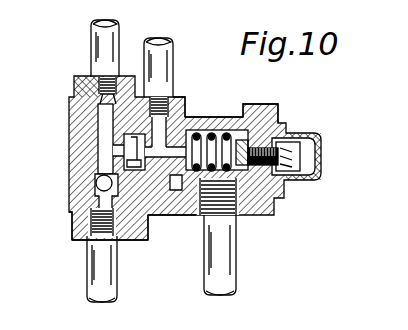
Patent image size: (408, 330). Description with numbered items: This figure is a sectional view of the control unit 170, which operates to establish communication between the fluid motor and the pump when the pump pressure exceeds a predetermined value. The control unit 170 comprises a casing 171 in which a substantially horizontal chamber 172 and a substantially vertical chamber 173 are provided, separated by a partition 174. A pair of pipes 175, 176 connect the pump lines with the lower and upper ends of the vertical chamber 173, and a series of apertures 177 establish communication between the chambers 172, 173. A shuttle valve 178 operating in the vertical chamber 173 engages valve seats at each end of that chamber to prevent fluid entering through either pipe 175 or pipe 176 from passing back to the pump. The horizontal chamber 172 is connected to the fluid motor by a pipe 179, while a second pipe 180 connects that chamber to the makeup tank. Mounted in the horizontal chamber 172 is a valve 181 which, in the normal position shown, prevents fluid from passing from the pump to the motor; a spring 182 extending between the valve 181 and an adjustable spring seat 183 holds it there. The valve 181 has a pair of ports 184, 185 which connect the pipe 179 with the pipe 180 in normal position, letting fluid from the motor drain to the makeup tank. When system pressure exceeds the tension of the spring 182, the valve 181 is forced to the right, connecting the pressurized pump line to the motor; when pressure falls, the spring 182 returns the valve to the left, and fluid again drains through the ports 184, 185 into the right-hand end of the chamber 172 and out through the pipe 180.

The control unit 170 is at (173, 163).
The casing 171 is at (217, 117).
The horizontal chamber 172 is at (236, 178).
The vertical chamber 173 is at (98, 136).
The partition 174 is at (152, 230).
The pipe 175 is at (89, 270).
The pipe 176 is at (91, 40).
The apertures 177 is at (131, 147).
The shuttle valve 178 is at (98, 181).
The pipe 179 is at (173, 56).
The pipe 180 is at (224, 273).
The valve 181 is at (173, 214).
The spring 182 is at (233, 117).
The adjustable spring seat 183 is at (281, 131).
The port 184 is at (232, 129).
The port 185 is at (178, 189).